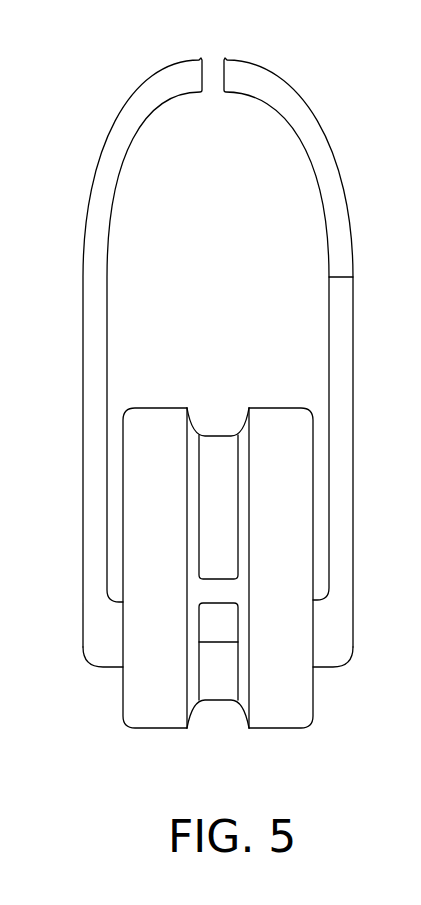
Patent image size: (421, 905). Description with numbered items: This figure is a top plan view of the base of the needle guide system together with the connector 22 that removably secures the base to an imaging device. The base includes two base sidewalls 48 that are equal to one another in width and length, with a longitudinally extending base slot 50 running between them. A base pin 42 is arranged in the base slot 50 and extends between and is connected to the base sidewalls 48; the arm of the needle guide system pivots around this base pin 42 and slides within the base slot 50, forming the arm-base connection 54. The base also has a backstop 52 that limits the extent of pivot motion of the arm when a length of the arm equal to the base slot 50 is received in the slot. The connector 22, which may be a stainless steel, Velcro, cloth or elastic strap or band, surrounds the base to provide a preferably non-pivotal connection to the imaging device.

The connector 22 is at (250, 362).
The base pin 42 is at (246, 544).
The base sidewalls 48 is at (298, 686).
The base slot 50 is at (222, 423).
The backstop 52 is at (228, 530).
The arm-base connection 54 is at (297, 192).